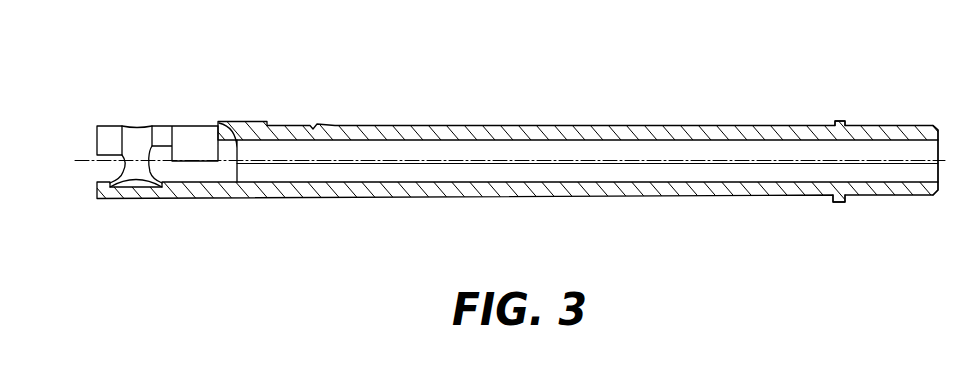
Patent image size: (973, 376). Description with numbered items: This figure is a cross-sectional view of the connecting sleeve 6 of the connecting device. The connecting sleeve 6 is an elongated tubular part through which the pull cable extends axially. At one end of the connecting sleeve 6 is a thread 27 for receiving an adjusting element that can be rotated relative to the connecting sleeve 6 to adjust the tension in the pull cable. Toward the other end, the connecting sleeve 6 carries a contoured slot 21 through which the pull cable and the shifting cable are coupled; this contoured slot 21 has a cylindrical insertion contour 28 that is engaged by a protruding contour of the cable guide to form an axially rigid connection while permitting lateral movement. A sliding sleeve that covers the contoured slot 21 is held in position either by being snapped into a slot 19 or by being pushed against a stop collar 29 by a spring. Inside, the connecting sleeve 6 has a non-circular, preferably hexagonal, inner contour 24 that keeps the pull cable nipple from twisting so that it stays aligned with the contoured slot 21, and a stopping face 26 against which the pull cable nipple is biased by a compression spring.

The connecting sleeve 6 is at (917, 128).
The slot 19 is at (312, 197).
The contoured slot 21 is at (173, 138).
The inner contour 24 is at (552, 158).
The stopping face 26 is at (188, 136).
The thread 27 is at (893, 127).
The cylindrical insertion contour 28 is at (140, 143).
The stop collar 29 is at (268, 197).